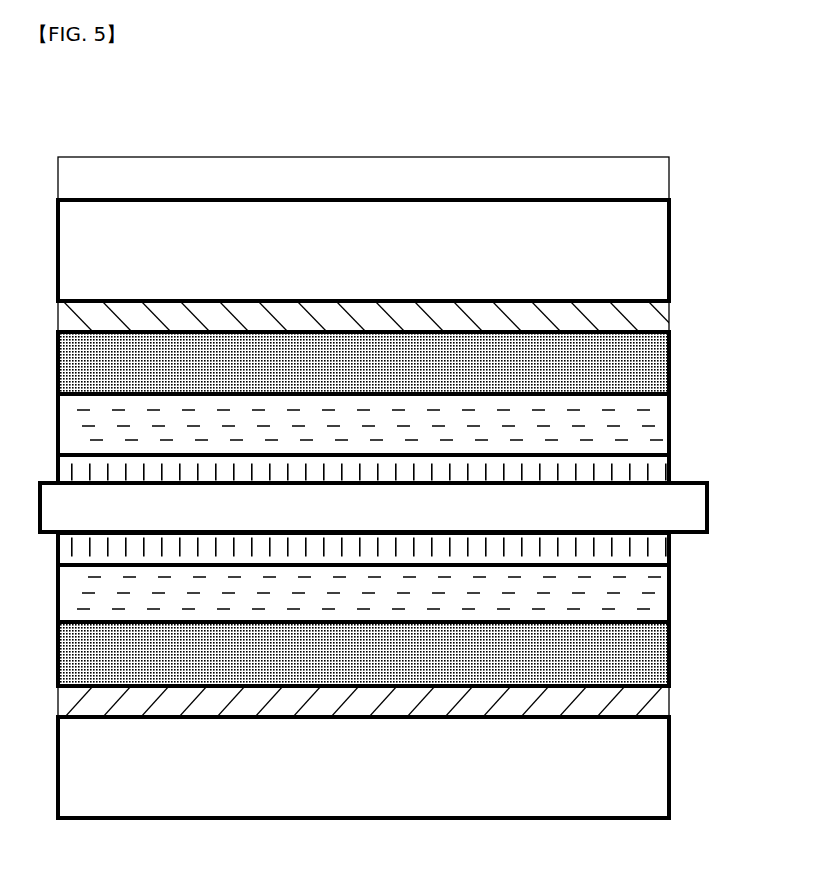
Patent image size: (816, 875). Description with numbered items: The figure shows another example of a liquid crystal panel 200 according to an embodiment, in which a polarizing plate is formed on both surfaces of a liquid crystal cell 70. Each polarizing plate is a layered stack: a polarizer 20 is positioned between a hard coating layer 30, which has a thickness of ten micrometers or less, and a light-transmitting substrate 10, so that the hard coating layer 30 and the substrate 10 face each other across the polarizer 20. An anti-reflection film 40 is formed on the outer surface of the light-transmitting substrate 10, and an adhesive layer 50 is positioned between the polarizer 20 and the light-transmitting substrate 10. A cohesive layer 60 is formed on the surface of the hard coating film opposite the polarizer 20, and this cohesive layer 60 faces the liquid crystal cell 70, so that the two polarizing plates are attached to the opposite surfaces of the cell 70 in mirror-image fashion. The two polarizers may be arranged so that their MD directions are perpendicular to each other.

The liquid crystal panel 200 is at (667, 133).
The light-transmitting substrate 10 is at (658, 253).
The polarizer 20 is at (660, 369).
The hard coating layer 30 is at (660, 424).
The anti-reflection film 40 is at (653, 181).
The adhesive layer 50 is at (660, 318).
The cohesive layer 60 is at (665, 473).
The liquid crystal cell 70 is at (688, 508).